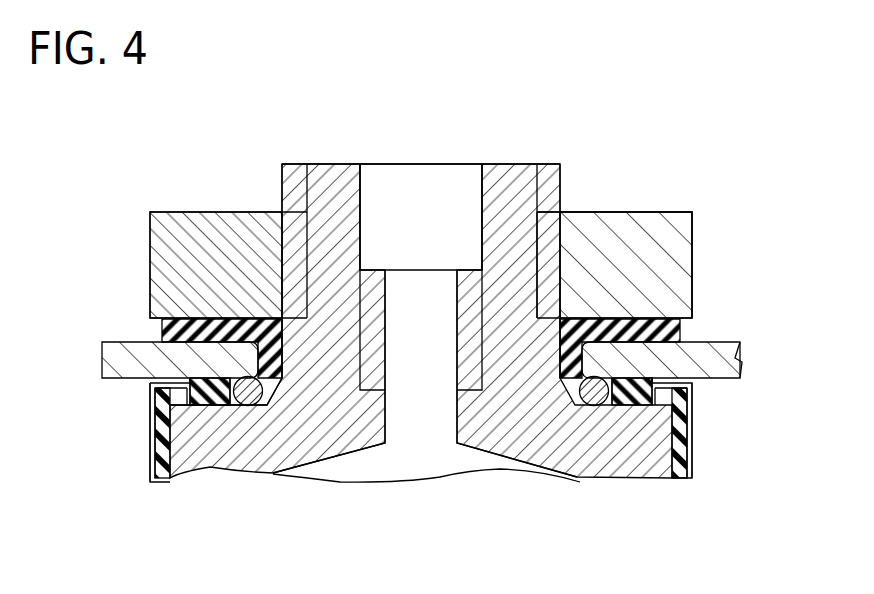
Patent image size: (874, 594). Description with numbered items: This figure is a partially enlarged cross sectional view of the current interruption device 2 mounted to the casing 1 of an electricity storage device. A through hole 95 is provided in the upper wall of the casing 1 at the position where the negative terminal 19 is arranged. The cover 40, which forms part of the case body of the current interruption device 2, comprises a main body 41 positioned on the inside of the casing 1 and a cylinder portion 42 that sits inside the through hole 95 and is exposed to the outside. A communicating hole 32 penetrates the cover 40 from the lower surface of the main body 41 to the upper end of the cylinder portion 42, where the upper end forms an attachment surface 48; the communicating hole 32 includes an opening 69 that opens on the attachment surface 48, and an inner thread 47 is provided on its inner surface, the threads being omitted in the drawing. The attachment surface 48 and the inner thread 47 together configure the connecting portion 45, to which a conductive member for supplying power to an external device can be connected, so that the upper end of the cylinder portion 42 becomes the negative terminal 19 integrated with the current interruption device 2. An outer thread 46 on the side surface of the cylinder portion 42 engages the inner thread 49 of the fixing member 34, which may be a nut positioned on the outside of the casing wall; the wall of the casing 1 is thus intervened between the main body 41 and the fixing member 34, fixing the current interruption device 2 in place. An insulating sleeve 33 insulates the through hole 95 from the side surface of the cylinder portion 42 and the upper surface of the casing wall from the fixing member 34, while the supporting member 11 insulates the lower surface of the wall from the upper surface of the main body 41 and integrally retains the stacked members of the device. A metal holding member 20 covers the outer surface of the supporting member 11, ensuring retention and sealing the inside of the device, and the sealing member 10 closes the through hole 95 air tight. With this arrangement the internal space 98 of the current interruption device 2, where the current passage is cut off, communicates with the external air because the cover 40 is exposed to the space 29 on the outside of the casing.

The cover 40 is at (588, 66).
The main body 41 is at (215, 415).
The cylinder portion 42 is at (318, 170).
The opening 69 is at (367, 164).
The communicating hole 32 is at (386, 313).
The connecting portion 45 is at (537, 104).
The inner thread 47 is at (453, 317).
The attachment surface 48 is at (486, 210).
The outer thread 46 is at (562, 198).
The inner thread 49 is at (540, 233).
The fixing member 34 is at (655, 213).
The negative terminal 19 is at (701, 168).
The space 29 is at (119, 200).
The insulating sleeve 33 is at (162, 325).
The through hole 95 is at (587, 318).
The casing 1 is at (727, 365).
The current interruption device 2 is at (750, 432).
The sealing member 10 is at (656, 386).
The supporting member 11 is at (690, 447).
The holding member 20 is at (693, 477).
The internal space 98 is at (365, 464).